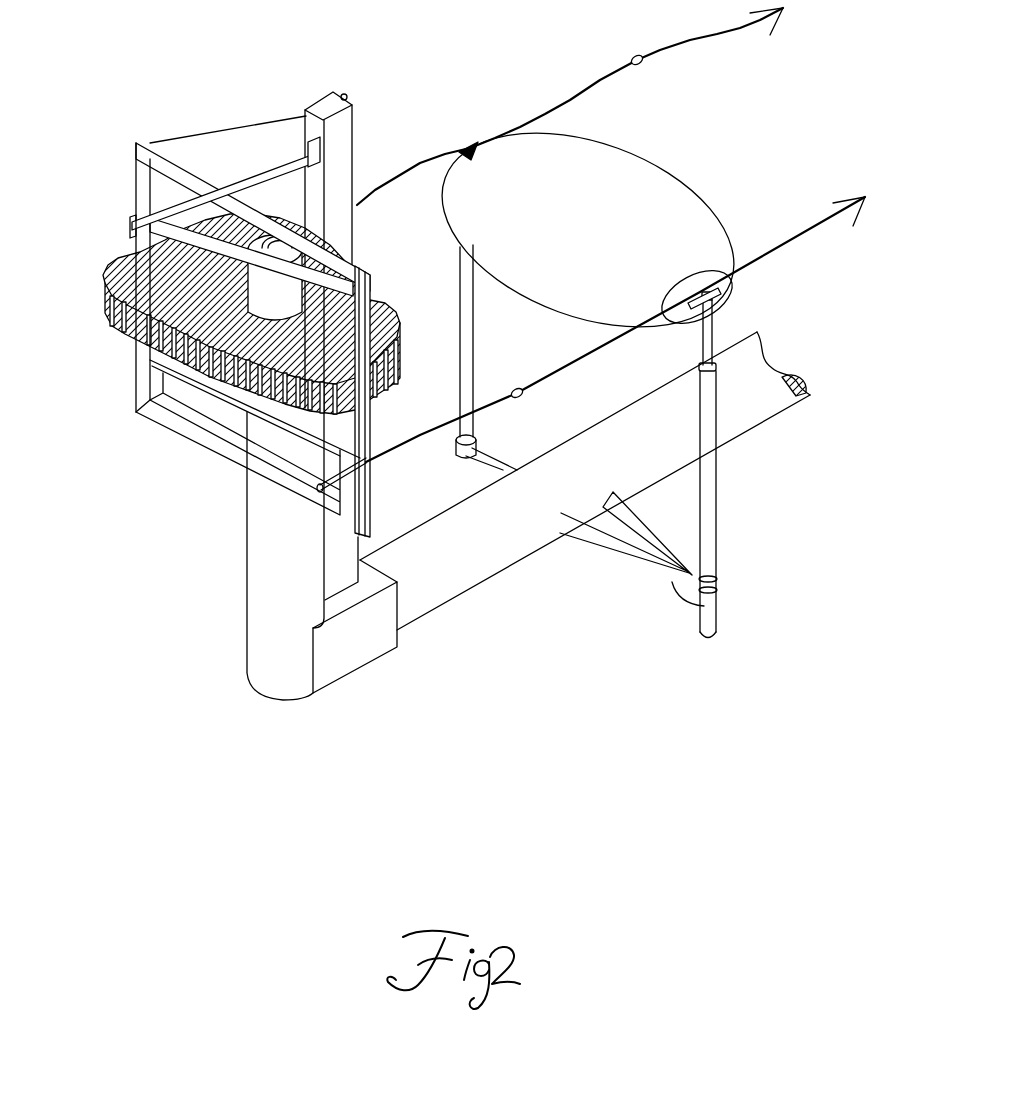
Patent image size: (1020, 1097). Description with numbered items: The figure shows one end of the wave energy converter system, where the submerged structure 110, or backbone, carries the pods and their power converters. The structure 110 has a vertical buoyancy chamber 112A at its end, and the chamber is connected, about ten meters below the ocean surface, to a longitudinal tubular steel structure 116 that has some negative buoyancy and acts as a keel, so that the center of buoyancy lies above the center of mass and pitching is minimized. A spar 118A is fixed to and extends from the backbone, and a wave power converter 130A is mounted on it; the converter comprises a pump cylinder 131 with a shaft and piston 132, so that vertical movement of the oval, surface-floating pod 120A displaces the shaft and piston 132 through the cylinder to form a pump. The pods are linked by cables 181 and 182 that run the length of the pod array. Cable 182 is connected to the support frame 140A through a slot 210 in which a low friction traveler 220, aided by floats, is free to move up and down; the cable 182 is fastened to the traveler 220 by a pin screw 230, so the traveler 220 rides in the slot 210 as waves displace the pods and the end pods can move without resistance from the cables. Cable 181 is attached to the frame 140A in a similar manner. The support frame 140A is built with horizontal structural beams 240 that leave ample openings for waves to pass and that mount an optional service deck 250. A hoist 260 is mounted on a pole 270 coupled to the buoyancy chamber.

The submerged U-shaped structure 110 is at (497, 577).
The buoyancy chamber 112A is at (253, 603).
The longitudinal tubular steel structure 116 is at (745, 415).
The spar 118A is at (640, 567).
The pod 120A is at (654, 163).
The wave power converter 130A is at (743, 482).
The pump cylinder 131 is at (717, 527).
The shaft and piston 132 is at (717, 313).
The support frame 140A is at (133, 418).
The cable 181 is at (437, 148).
The cable 182 is at (493, 409).
The slot 210 is at (376, 398).
The traveler 220 is at (378, 468).
The pin screw 230 is at (395, 458).
The horizontal structural beam 240 is at (202, 385).
The service deck 250 is at (107, 331).
The hoist 260 is at (131, 236).
The pole 270 is at (345, 96).